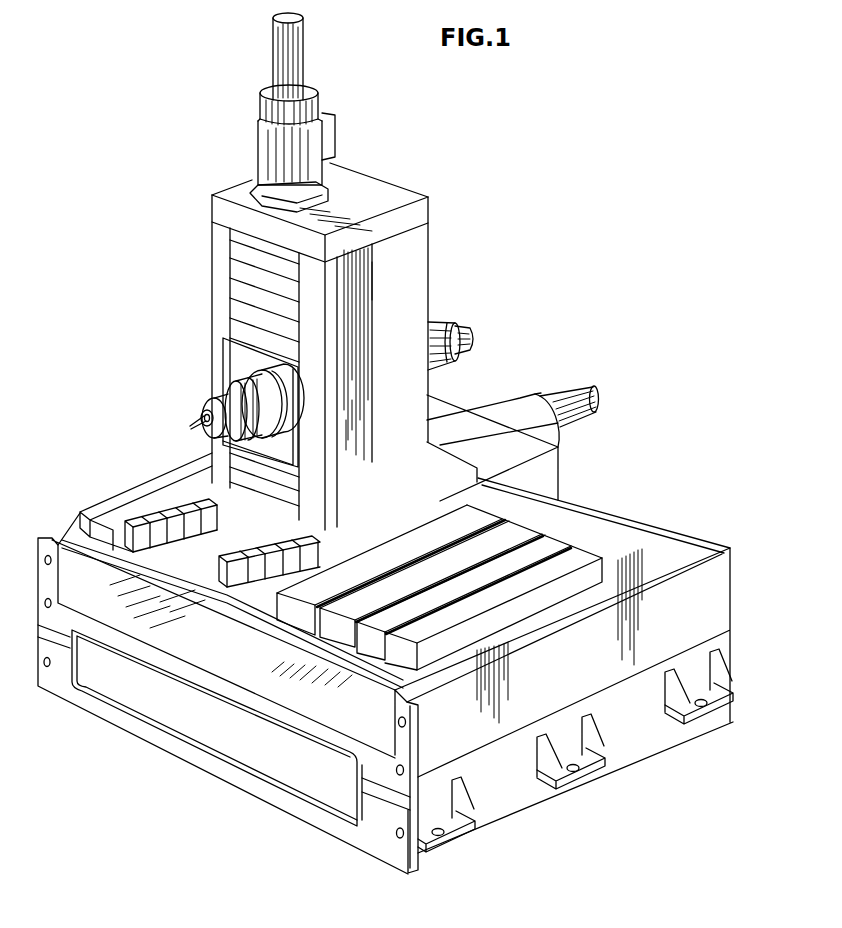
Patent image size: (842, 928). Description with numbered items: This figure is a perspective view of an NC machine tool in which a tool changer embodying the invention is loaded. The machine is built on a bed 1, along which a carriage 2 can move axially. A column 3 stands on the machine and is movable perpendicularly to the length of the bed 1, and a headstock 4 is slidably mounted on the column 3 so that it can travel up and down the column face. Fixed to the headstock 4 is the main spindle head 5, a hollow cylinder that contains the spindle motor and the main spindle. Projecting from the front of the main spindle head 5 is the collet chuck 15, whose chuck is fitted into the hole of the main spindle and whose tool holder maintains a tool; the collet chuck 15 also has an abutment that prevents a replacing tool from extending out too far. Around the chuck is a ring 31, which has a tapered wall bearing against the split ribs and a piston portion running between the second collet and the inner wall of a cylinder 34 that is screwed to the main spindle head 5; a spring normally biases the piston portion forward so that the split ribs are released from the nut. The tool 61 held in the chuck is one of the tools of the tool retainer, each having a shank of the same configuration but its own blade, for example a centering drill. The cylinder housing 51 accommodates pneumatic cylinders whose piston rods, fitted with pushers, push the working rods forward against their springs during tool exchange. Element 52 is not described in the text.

The bed 1 is at (713, 596).
The carriage 2 is at (530, 449).
The column 3 is at (420, 268).
The headstock 4 is at (235, 352).
The main spindle head 5 is at (250, 382).
The collet chuck 15 is at (195, 403).
The ring 31 is at (203, 401).
The cylinder 34 is at (223, 390).
The cylinder housing 51 is at (471, 317).
The feed shaft 52 is at (437, 330).
The tool 61 is at (193, 432).